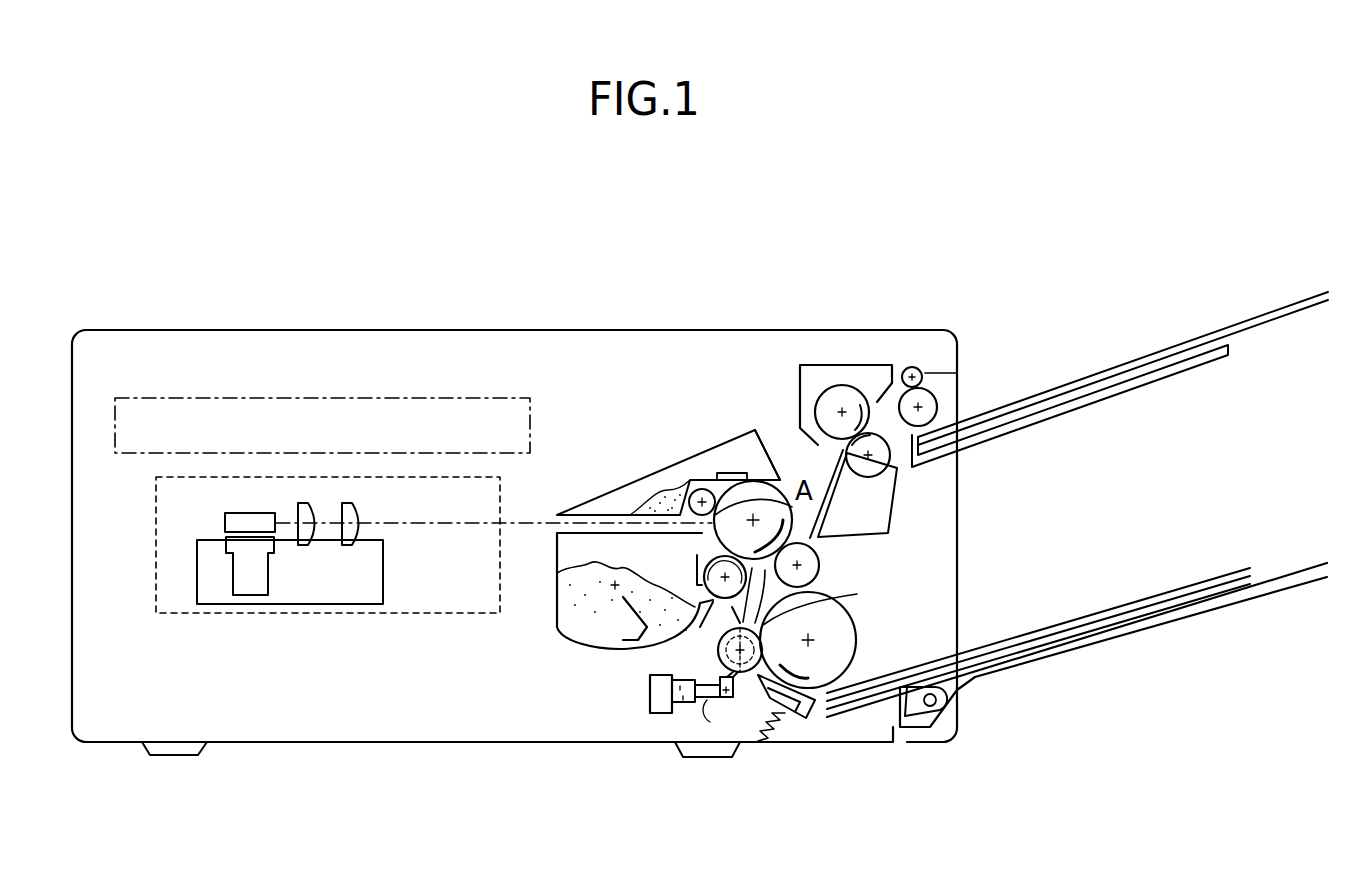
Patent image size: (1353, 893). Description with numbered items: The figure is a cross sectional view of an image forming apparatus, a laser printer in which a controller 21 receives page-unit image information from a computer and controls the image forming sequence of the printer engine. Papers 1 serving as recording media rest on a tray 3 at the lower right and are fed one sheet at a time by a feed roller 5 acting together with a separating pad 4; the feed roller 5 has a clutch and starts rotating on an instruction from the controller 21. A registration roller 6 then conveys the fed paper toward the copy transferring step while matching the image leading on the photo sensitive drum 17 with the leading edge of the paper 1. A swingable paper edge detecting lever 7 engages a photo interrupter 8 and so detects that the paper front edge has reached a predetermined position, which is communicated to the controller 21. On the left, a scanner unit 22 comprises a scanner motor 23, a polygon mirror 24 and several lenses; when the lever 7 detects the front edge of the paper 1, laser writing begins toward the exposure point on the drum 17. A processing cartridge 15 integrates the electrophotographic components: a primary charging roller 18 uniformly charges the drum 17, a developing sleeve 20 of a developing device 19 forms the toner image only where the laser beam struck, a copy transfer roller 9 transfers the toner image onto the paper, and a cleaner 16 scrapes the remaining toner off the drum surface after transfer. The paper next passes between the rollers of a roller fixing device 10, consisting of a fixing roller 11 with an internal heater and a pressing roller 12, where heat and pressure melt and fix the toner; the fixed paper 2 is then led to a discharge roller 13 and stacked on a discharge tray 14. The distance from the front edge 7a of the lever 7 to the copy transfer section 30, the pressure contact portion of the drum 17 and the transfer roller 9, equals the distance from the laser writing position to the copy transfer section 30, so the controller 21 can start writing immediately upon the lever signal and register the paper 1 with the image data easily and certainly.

The papers 1 is at (1194, 584).
The paper 2 is at (1173, 344).
The sheet feed tray 3 is at (1113, 638).
The separating pad 4 is at (795, 708).
The feed roller 5 is at (855, 632).
The registration roller 6 is at (747, 672).
The paper edge detecting lever 7 is at (718, 698).
The front edge of the paper edge detecting lever 7a is at (845, 613).
The photo interrupter 8 is at (651, 702).
The copy transfer roller 9 is at (820, 564).
The roller fixing device 10 is at (830, 365).
The fixing roller 11 is at (872, 385).
The pressing roller 12 is at (893, 470).
The discharge roller 13 is at (922, 368).
The discharge tray 14 is at (1106, 396).
The processing cartridge 15 is at (698, 450).
The cleaner 16 is at (733, 473).
The photo sensitive drum 17 is at (755, 488).
The primary charging roller 18 is at (690, 484).
The developing device 19 is at (576, 556).
The developing sleeve 20 is at (720, 600).
The controller 21 is at (178, 398).
The scanner unit 22 is at (156, 570).
The scanner motor 23 is at (245, 596).
The polygon mirror 24 is at (226, 522).
The copy transfer section 30 is at (775, 490).